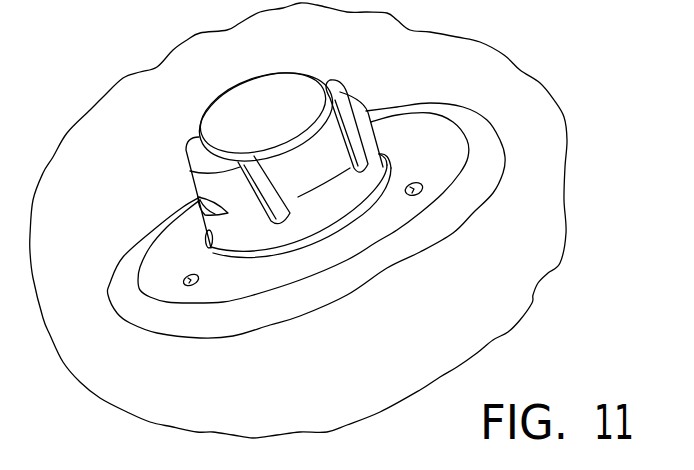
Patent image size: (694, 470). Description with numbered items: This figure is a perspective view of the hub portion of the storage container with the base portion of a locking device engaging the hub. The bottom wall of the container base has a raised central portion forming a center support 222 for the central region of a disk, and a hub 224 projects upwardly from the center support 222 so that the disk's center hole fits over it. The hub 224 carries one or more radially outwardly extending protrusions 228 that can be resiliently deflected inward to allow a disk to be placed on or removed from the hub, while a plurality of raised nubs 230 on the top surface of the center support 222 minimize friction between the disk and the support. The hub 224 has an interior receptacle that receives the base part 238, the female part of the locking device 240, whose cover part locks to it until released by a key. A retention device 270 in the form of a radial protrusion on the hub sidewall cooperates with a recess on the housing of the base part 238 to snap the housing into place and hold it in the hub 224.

The center support 222 is at (330, 247).
The hub 224 is at (414, 97).
The protrusion 228 is at (198, 203).
The raised nub 230 is at (422, 185).
The base part 238 is at (252, 111).
The locking device 240 is at (207, 112).
The retention device 270 is at (322, 167).